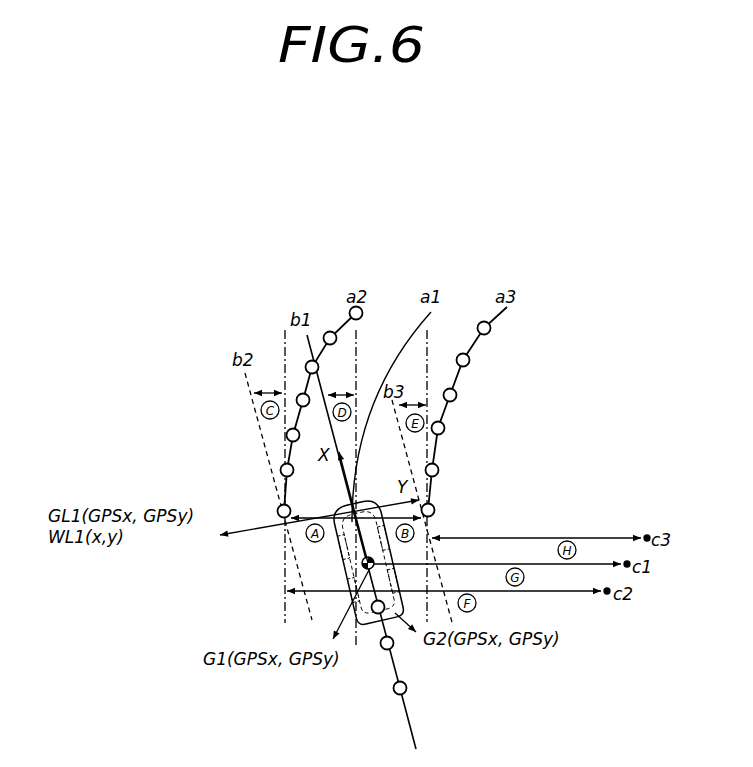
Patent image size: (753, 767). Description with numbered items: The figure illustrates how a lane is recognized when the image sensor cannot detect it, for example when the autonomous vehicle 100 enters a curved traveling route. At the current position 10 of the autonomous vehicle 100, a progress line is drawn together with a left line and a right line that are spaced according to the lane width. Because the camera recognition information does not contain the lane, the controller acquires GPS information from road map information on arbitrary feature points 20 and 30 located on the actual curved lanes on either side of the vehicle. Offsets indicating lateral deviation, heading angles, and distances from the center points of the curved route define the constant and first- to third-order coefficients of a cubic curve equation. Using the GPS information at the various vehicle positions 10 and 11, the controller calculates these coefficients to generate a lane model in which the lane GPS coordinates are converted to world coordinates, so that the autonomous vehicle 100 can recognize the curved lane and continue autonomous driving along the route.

The current position 10 is at (345, 568).
The position of the vehicle 11 is at (373, 612).
The feature point 20 is at (277, 511).
The feature point 30 is at (434, 507).
The autonomous vehicle 100 is at (362, 563).